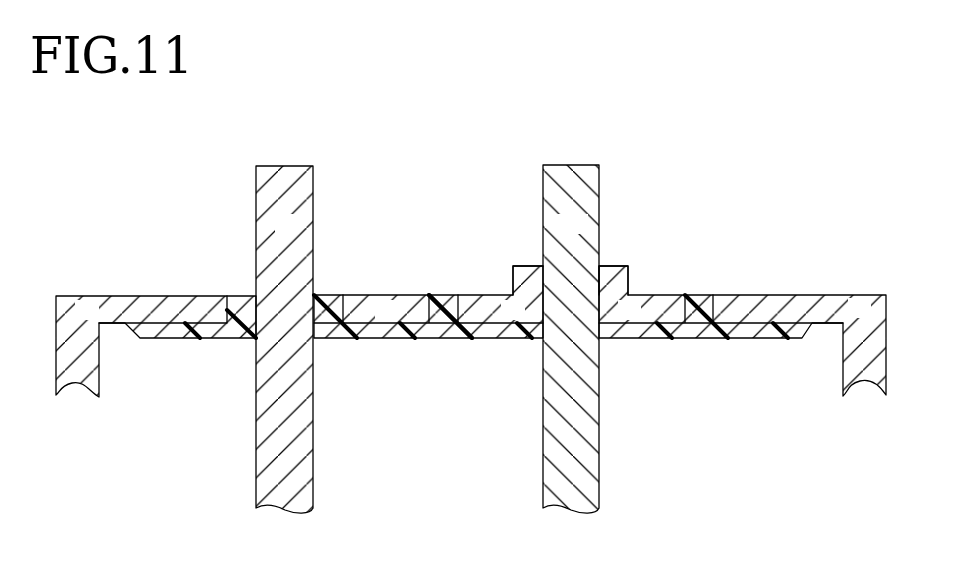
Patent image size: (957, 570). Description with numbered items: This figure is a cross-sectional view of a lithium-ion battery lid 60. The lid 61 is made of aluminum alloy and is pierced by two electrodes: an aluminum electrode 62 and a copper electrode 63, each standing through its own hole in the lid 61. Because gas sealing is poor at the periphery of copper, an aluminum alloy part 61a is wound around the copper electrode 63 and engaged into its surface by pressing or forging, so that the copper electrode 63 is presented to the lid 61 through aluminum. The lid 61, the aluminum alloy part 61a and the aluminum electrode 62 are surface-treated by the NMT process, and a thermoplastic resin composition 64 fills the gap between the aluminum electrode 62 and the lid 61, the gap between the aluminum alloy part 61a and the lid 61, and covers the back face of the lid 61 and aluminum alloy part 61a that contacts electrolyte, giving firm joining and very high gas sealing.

The lithium-ion battery lid 60 is at (118, 166).
The lid 61 is at (128, 295).
The aluminum alloy part 61a is at (528, 265).
The aluminum electrode 62 is at (283, 165).
The copper electrode 63 is at (565, 165).
The thermoplastic resin composition 64 is at (444, 339).